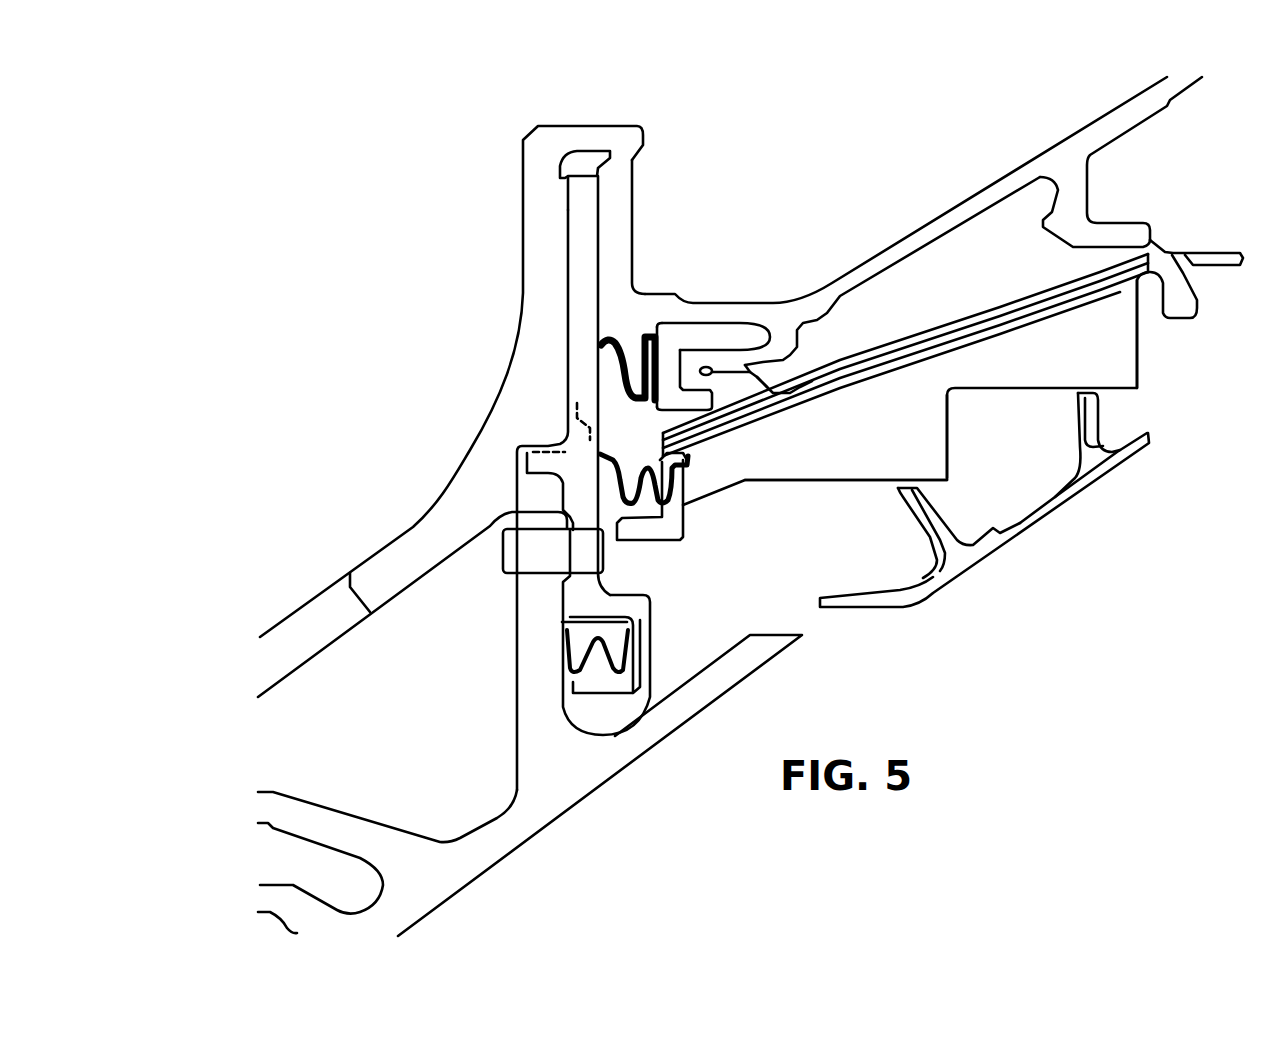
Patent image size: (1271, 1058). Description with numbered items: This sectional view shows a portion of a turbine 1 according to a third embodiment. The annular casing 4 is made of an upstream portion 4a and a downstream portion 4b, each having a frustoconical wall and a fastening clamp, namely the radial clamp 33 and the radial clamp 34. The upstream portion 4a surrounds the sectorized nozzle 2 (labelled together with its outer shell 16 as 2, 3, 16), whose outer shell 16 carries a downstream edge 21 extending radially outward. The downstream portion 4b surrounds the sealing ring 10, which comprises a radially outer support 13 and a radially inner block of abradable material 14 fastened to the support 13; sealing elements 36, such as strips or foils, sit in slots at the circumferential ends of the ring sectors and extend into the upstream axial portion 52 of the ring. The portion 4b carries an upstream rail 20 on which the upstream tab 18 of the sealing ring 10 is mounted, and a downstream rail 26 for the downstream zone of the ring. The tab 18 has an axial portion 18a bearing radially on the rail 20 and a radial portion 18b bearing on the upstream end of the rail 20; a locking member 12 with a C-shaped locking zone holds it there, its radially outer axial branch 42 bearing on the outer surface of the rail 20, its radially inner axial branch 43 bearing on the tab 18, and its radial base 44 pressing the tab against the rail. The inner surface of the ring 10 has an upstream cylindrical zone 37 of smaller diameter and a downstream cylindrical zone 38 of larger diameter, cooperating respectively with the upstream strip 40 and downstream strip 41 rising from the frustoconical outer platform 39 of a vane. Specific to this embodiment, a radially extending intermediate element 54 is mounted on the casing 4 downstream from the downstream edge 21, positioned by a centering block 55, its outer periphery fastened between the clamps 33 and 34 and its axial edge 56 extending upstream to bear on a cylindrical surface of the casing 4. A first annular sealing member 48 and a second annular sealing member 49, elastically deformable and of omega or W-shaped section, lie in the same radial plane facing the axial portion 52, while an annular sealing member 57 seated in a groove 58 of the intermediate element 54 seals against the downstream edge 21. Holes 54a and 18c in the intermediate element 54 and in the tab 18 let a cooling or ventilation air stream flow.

The turbine 1 is at (799, 135).
The nozzle 2 is at (600, 785).
The door 3 is at (600, 785).
The casing 4 is at (412, 585).
The upstream portion of the casing 4a is at (388, 575).
The downstream portion of the casing 4b is at (936, 232).
The sealing ring 10 is at (874, 434).
The locking member 12 is at (716, 274).
The radially outer support 13 is at (1103, 285).
The block of abradable material 14 is at (997, 363).
The outer shell 16 is at (550, 793).
The upstream tab 18 is at (809, 484).
The axial portion of the tab 18a is at (752, 393).
The radial portion of the tab 18b is at (723, 380).
The hole or bore 18c is at (750, 385).
The upstream rail 20 is at (750, 358).
The downstream edge 21 is at (540, 688).
The downstream rail 26 is at (1128, 232).
The fastening clamp 33 is at (547, 205).
The fastening clamp 34 is at (618, 188).
The sealing elements 36 is at (888, 362).
The upstream cylindrical zone 37 is at (868, 482).
The downstream cylindrical zone 38 is at (1120, 389).
The outer platform 39 is at (1045, 512).
The upstream strip 40 is at (937, 530).
The downstream strip 41 is at (1089, 443).
The radially outer axial branch 42 is at (706, 337).
The radially inner axial branch 43 is at (690, 373).
The radial base 44 is at (667, 350).
The first annular sealing member 48 is at (618, 365).
The second annular sealing member 49 is at (605, 458).
The axial portion of the sealing ring 52 is at (648, 537).
The intermediate element 54 is at (583, 255).
The hole or bore 54a is at (573, 435).
The positioning or centering block 55 is at (583, 558).
The axial edge 56 is at (527, 457).
The annular sealing member 57 is at (590, 660).
The groove 58 is at (585, 625).